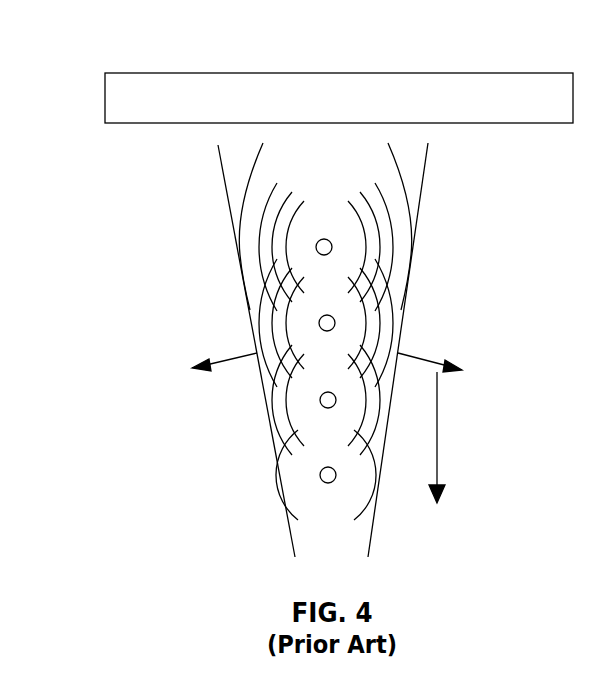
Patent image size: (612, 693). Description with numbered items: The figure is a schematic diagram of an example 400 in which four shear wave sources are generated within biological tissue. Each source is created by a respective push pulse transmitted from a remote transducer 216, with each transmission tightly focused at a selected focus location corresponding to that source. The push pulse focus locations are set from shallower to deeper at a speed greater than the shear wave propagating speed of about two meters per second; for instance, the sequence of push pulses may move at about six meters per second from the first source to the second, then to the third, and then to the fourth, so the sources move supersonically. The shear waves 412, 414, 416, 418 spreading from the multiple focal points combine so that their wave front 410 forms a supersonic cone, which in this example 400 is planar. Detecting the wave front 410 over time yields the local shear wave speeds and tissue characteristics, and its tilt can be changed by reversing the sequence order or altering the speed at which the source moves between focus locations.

The transducer 216 is at (333, 73).
The example 400 is at (270, 348).
The wave front 410 is at (423, 165).
The shear wave 412 is at (393, 157).
The shear wave 414 is at (390, 286).
The shear wave 416 is at (375, 441).
The shear wave 418 is at (366, 516).